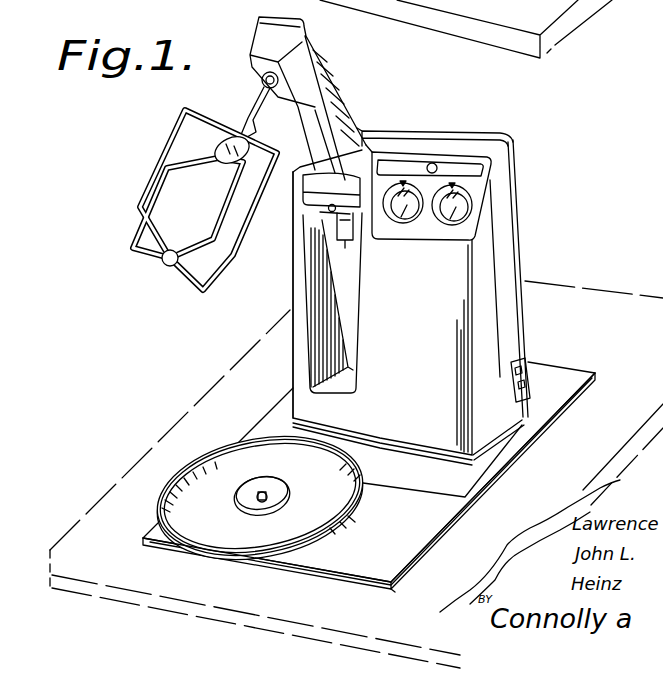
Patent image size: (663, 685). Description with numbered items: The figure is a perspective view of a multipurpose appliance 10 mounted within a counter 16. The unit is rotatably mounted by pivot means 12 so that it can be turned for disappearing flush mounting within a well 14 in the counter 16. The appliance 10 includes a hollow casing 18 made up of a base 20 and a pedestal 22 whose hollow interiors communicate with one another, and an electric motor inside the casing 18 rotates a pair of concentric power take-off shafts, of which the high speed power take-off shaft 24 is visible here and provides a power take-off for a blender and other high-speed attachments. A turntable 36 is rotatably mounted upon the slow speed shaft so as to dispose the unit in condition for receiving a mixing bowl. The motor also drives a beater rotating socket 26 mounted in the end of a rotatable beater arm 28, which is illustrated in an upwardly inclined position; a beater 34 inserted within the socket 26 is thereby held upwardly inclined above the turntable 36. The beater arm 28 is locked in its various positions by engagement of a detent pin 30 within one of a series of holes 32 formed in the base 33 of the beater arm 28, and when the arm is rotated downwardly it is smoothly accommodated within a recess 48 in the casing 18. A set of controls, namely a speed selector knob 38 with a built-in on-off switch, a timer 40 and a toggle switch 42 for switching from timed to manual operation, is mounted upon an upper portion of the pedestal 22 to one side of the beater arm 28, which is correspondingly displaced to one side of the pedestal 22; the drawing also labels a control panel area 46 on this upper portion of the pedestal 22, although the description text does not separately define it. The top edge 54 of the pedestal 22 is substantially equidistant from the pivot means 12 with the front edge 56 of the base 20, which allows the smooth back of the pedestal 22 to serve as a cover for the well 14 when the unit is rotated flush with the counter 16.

The multipurpose appliance 10 is at (150, 130).
The pivot means 12 is at (525, 412).
The well 14 is at (455, 508).
The counter 16 is at (603, 478).
The hollow casing 18 is at (529, 232).
The base 20 is at (333, 542).
The pedestal 22 is at (505, 313).
The power take-off shaft 24 is at (244, 495).
The beater rotating socket 26 is at (260, 86).
The beater arm 28 is at (331, 72).
The detent pin 30 is at (348, 237).
The holes 32 is at (330, 210).
The base of beater arm 33 is at (317, 185).
The beater 34 is at (152, 170).
The turntable 36 is at (208, 547).
The speed selector knob 38 is at (399, 193).
The timer 40 is at (454, 192).
The toggle switch 42 is at (433, 163).
The control panel 46 is at (362, 130).
The recess 48 is at (325, 378).
The top edge 54 is at (511, 138).
The front edge 56 is at (385, 599).